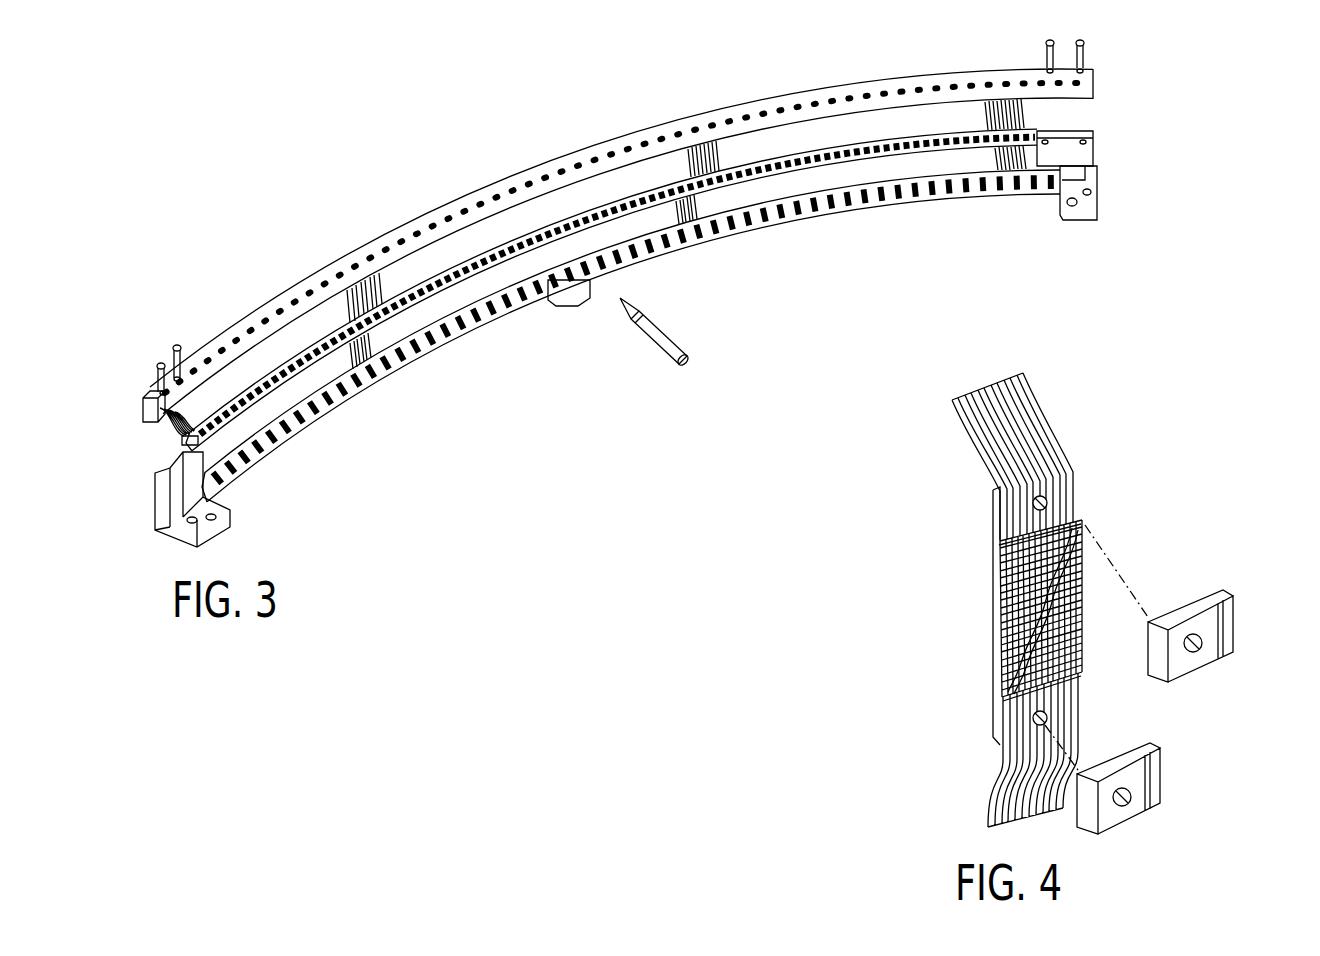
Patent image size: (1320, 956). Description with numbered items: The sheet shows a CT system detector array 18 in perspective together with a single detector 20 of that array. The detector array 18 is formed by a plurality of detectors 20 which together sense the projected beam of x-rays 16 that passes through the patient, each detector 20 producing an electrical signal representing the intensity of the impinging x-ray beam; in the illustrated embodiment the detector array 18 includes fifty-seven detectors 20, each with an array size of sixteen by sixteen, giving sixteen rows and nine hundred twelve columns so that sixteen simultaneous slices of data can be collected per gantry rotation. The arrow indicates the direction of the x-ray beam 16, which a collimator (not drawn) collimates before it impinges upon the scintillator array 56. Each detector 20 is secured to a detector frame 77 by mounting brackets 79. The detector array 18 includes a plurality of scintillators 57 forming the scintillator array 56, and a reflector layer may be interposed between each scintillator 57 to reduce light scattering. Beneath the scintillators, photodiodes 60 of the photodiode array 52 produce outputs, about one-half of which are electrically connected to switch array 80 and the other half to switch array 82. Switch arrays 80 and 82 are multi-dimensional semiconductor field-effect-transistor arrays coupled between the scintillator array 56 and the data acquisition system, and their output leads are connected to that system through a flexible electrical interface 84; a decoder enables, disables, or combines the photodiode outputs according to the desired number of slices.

In FIG. 3, the beam of x-rays 16 is at (656, 351).
In FIG. 3, the detector array 18 is at (505, 168).
In FIG. 3, the detector 20 is at (352, 275).
In FIG. 4, the detector 20 is at (1102, 603).
In FIG. 3, the photodiode array 52 is at (1047, 120).
In FIG. 4, the photodiode array 52 is at (988, 684).
In FIG. 3, the scintillator array 56 is at (943, 170).
In FIG. 4, the scintillator array 56 is at (1032, 619).
In FIG. 4, the scintillator 57 is at (1078, 652).
In FIG. 4, the photodiode 60 is at (1005, 614).
In FIG. 3, the detector frame 77 is at (182, 440).
In FIG. 4, the mounting bracket 79 is at (1210, 612).
In FIG. 4, the switch array 80 is at (1000, 541).
In FIG. 4, the switch array 82 is at (1075, 688).
In FIG. 4, the flexible electrical interface 84 is at (1062, 434).